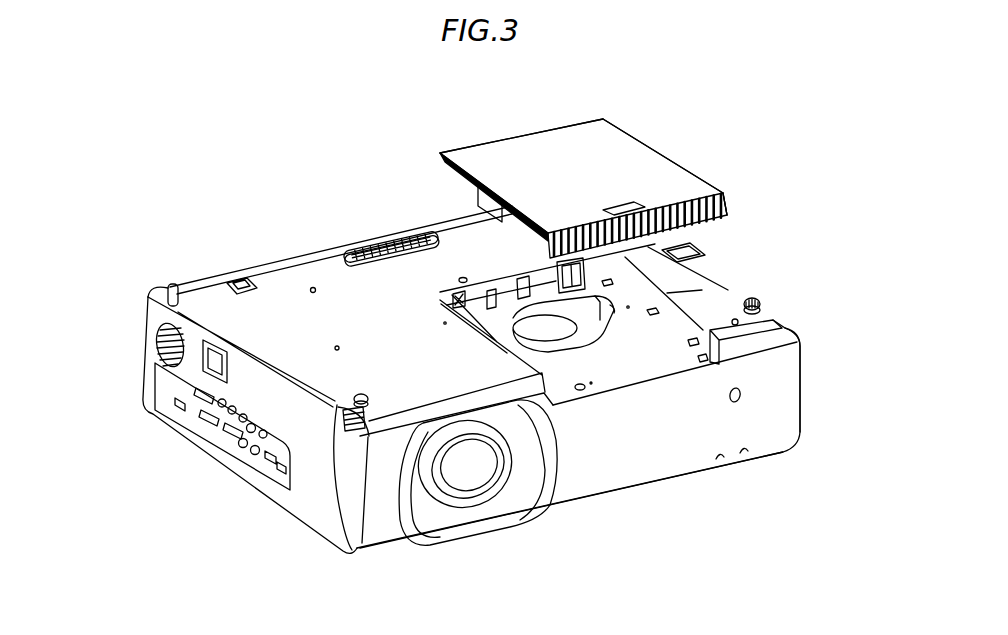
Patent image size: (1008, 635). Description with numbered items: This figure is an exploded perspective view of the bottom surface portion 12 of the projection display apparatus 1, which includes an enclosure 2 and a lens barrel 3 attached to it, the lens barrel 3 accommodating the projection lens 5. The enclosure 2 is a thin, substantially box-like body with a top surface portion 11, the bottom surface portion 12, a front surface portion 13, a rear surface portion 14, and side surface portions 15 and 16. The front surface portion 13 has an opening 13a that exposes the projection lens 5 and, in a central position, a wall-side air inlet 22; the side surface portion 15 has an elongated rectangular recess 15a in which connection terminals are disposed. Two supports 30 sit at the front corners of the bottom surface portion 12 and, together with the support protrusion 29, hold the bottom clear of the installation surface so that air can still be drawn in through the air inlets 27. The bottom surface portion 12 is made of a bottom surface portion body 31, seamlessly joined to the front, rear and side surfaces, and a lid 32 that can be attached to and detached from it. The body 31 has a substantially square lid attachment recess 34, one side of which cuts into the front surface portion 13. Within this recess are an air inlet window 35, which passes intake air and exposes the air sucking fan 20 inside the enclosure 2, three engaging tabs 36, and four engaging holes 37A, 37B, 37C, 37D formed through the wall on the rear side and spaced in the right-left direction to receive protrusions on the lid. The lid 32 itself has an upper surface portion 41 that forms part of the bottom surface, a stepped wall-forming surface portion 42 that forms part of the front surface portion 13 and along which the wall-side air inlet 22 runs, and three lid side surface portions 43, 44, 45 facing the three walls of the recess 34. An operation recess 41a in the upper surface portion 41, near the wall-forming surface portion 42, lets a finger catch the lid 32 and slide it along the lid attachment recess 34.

The projection display apparatus 1 is at (724, 99).
The enclosure 2 is at (215, 265).
The lens barrel 3 is at (480, 508).
The projection lens 5 is at (450, 488).
The top surface portion 11 is at (760, 462).
The bottom surface portion 12 is at (312, 287).
The front surface portion 13 is at (573, 478).
The opening 13a is at (510, 484).
The rear surface portion 14 is at (140, 330).
The side surface portion 15 is at (302, 498).
The recess 15a is at (216, 439).
The side surface portion 16 is at (799, 384).
The air sucking fan 20 is at (585, 338).
The wall-side air inlet 22 is at (245, 455).
The switch 27 is at (264, 268).
The support protrusion 29 is at (384, 237).
The supports 30 is at (356, 438).
The bottom surface portion body 31 is at (332, 282).
The lid 32 is at (601, 168).
The lid attachment recess 34 is at (668, 364).
The air inlet window 35 is at (627, 330).
The engaging tabs 36 is at (656, 311).
The engaging hole 37A is at (560, 270).
The engaging hole 37B is at (519, 279).
The engaging hole 37C is at (489, 291).
The engaging hole 37D is at (455, 294).
The upper surface portion 41 is at (608, 140).
The operation recess 41a is at (632, 198).
The wall-forming surface portion 42 is at (728, 221).
The lid side surface portion 43 is at (694, 170).
The lid side surface portion 44 is at (500, 143).
The lid side surface portion 45 is at (470, 203).